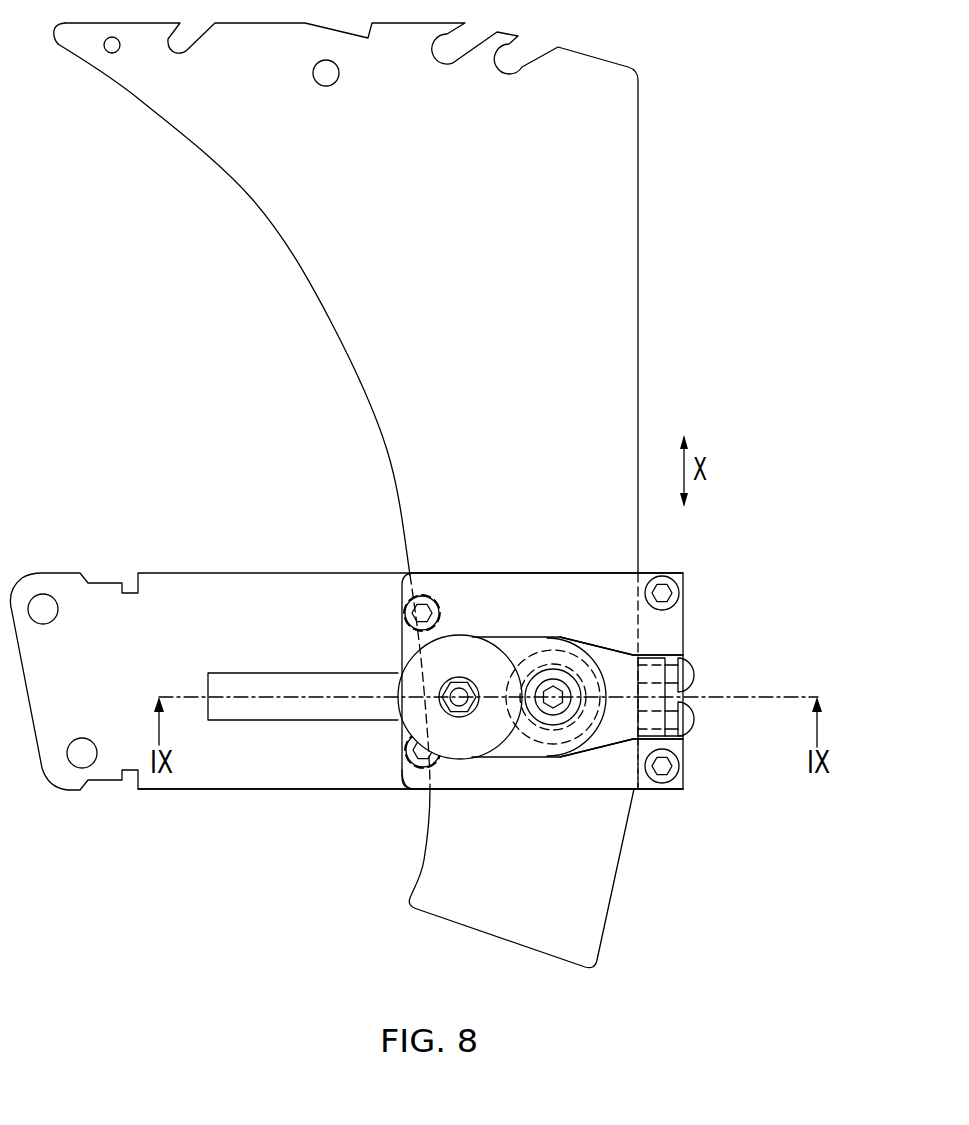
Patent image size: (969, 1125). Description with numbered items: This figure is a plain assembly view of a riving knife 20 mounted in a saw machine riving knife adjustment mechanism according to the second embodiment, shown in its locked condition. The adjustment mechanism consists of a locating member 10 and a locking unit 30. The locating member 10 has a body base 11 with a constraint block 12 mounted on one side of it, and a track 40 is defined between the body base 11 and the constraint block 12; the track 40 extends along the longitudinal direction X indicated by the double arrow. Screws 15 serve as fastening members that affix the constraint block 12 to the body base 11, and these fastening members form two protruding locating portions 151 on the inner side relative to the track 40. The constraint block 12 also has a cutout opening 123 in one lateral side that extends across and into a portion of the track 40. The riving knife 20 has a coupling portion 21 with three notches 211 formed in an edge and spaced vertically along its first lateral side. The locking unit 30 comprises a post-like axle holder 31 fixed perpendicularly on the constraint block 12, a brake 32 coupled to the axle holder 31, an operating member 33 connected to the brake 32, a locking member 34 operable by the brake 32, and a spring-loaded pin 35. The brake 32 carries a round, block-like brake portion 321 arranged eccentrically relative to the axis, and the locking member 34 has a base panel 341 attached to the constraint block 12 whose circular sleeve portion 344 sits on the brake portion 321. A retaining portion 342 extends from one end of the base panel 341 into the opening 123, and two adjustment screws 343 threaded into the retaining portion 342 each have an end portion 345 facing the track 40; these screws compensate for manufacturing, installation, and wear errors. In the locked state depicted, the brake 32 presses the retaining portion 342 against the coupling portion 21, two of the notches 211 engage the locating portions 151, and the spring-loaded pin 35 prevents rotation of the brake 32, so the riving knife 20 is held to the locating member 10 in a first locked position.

The locating member 10 is at (238, 568).
The body base 11 is at (281, 781).
The constraint block 12 is at (404, 777).
The cutout opening 123 is at (668, 736).
The screws 15 is at (411, 613).
The protruding locating portions 151 is at (422, 681).
The riving knife 20 is at (650, 391).
The coupling portion 21 is at (590, 926).
The notches 211 is at (441, 596).
The locking unit 30 is at (393, 737).
The axle holder 31 is at (560, 693).
The brake 32 is at (518, 758).
The brake portion 321 is at (553, 650).
The operating member 33 is at (223, 712).
The locking member 34 is at (605, 744).
The base panel 341 is at (576, 744).
The retaining portion 342 is at (656, 736).
The adjustment screws 343 is at (694, 665).
The circular sleeve portion 344 is at (553, 697).
The end portion 345 is at (640, 762).
The spring-loaded pin 35 is at (455, 690).
The track 40 is at (645, 572).